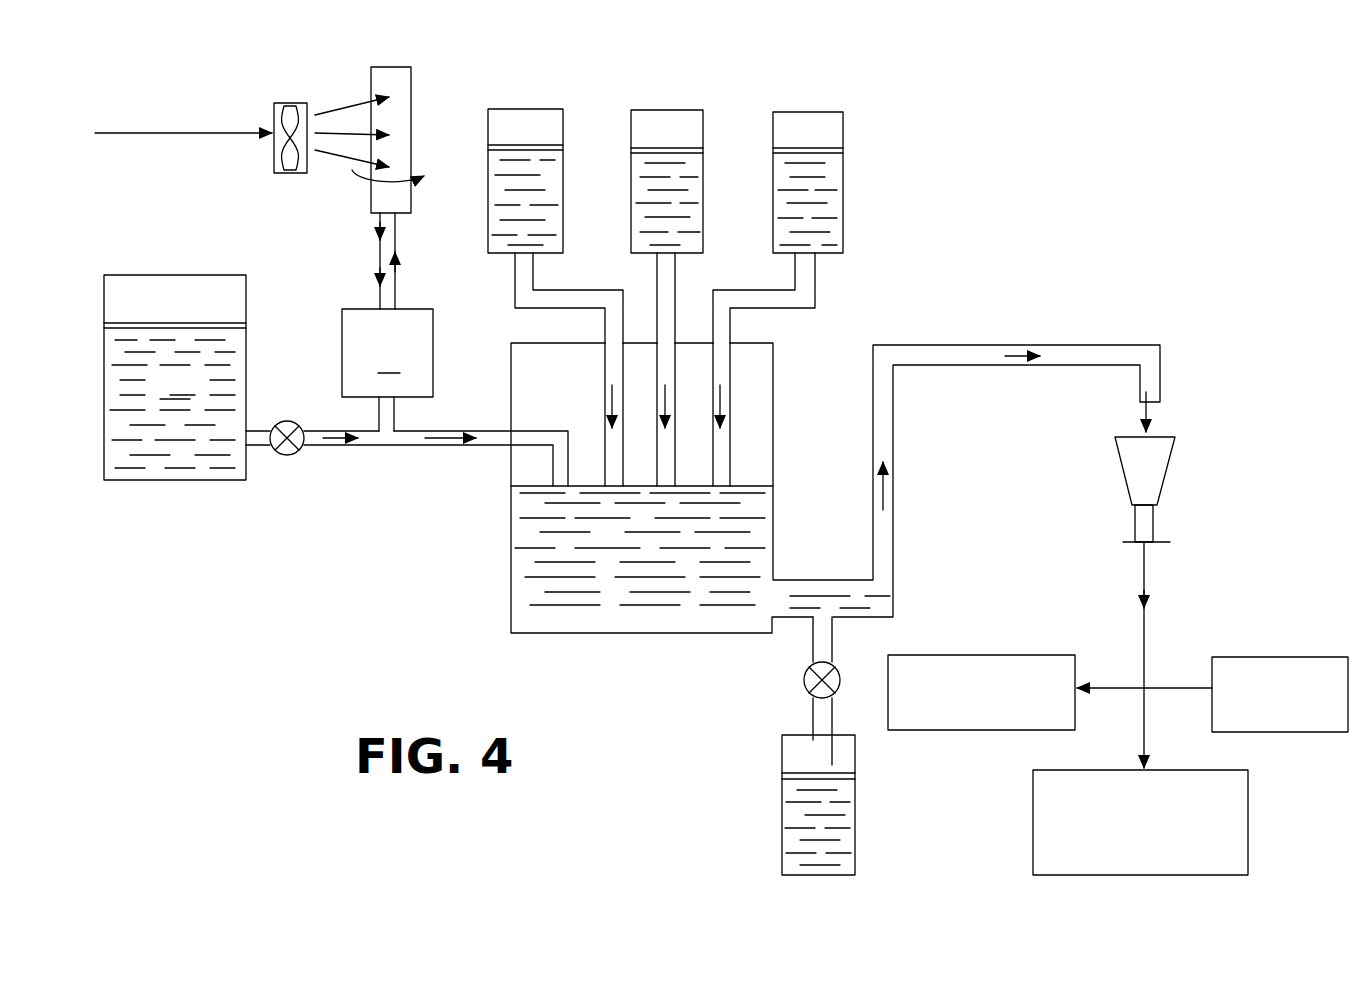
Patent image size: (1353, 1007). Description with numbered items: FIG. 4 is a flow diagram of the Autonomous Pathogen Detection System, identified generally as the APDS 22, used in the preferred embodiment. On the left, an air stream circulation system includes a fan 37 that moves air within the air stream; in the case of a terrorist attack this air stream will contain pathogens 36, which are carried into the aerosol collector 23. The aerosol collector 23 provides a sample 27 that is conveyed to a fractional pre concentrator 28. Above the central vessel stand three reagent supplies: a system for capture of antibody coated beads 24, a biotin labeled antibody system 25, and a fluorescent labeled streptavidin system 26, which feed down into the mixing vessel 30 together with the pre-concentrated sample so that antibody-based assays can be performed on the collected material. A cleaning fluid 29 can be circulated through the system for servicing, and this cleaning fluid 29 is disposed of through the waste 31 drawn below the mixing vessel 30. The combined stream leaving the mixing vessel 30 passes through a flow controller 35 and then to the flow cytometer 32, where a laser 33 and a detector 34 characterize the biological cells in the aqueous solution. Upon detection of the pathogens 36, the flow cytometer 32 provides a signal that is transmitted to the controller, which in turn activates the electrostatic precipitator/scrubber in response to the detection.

The autonomous pathogen detection system 22 is at (1040, 186).
The aerosol collector 23 is at (398, 67).
The system for capture of antibody coated beads 24 is at (530, 109).
The biotin labeled antibody system 25 is at (661, 110).
The fluorescent labeled streptavidin system 26 is at (815, 112).
The sample 27 is at (376, 268).
The fractional pre concentrator 28 is at (387, 370).
The cleaning fluid 29 is at (175, 377).
The mixing chamber 30 is at (509, 570).
The waste 31 is at (780, 796).
The flow cytometer 32 is at (1033, 812).
The laser 33 is at (1262, 657).
The detector 34 is at (968, 655).
The flow controller 35 is at (1166, 478).
The pathogens 36 is at (150, 132).
The fan 37 is at (292, 103).